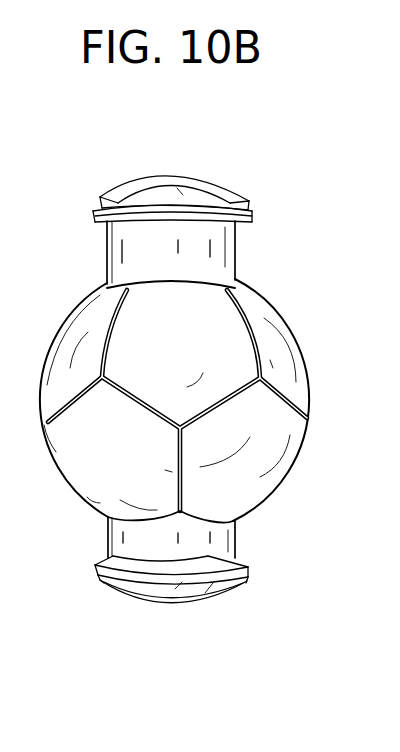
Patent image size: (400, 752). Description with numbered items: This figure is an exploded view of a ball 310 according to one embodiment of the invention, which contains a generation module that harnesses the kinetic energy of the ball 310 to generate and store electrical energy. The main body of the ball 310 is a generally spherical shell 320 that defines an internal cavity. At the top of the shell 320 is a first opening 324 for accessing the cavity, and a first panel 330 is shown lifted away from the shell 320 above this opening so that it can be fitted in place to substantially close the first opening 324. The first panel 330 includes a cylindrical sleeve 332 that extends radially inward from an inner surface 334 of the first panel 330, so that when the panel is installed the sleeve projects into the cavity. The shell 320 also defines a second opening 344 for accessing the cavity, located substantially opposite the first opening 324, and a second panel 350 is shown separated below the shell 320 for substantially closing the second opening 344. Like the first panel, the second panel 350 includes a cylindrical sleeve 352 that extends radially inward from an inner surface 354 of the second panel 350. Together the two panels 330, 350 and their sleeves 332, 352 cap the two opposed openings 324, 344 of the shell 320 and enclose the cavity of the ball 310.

The ball 310 is at (324, 200).
The shell 320 is at (278, 347).
The first opening 324 is at (232, 287).
The first panel 330 is at (207, 192).
The cylindrical sleeve 332 is at (218, 249).
The inner surface 334 is at (243, 216).
The second opening 344 is at (240, 516).
The second panel 350 is at (207, 594).
The cylindrical sleeve 352 is at (229, 534).
The inner surface 354 is at (244, 562).